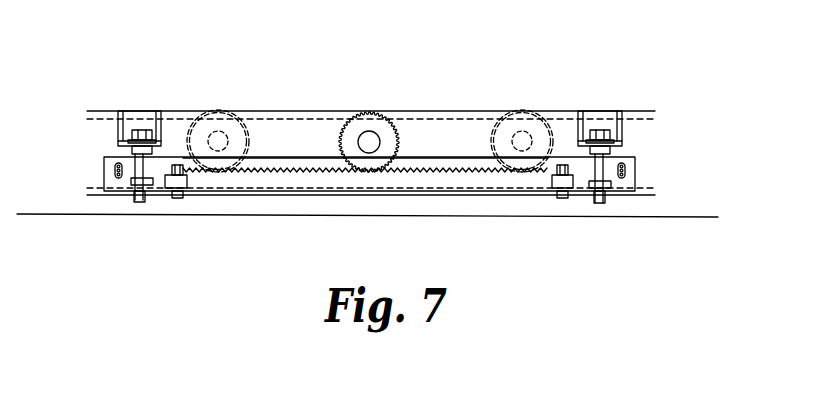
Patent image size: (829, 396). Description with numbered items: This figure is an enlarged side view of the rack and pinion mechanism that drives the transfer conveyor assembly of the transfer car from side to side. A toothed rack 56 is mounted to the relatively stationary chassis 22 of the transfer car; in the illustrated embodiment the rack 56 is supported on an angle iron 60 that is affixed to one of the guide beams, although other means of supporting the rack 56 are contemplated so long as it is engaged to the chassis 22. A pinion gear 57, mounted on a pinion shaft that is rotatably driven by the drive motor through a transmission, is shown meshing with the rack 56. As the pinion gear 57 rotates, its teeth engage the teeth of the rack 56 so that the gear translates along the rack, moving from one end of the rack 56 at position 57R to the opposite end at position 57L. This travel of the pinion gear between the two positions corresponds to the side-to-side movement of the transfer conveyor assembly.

The chassis 22 is at (375, 205).
The rack 56 is at (275, 170).
The pinion gear 57 is at (360, 112).
The pinion gear position (left end) 57L is at (223, 109).
The pinion gear position (right end) 57R is at (520, 112).
The angle iron 60 is at (225, 187).